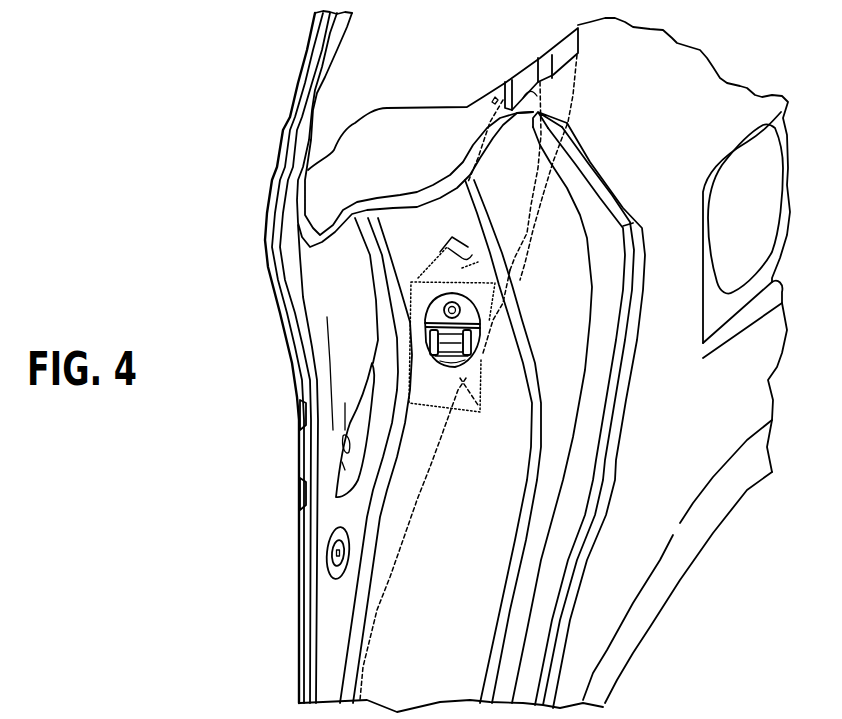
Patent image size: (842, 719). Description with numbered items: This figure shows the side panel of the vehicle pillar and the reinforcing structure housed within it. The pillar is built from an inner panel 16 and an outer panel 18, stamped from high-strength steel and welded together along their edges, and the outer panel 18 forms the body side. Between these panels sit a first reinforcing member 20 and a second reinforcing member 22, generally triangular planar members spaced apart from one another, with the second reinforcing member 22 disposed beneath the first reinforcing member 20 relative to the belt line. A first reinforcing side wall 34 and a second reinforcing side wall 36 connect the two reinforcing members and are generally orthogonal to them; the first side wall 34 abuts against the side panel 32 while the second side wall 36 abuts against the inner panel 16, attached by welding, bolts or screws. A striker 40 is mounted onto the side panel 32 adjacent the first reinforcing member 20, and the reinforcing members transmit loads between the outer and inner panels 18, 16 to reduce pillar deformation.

The inner panel 16 is at (397, 127).
The outer panel 18 is at (673, 487).
The first reinforcing member 20 is at (499, 204).
The second reinforcing member 22 is at (419, 539).
The side panel 32 is at (457, 637).
The first reinforcing side wall 34 is at (485, 352).
The second reinforcing side wall 36 is at (422, 214).
The striker 40 is at (425, 361).